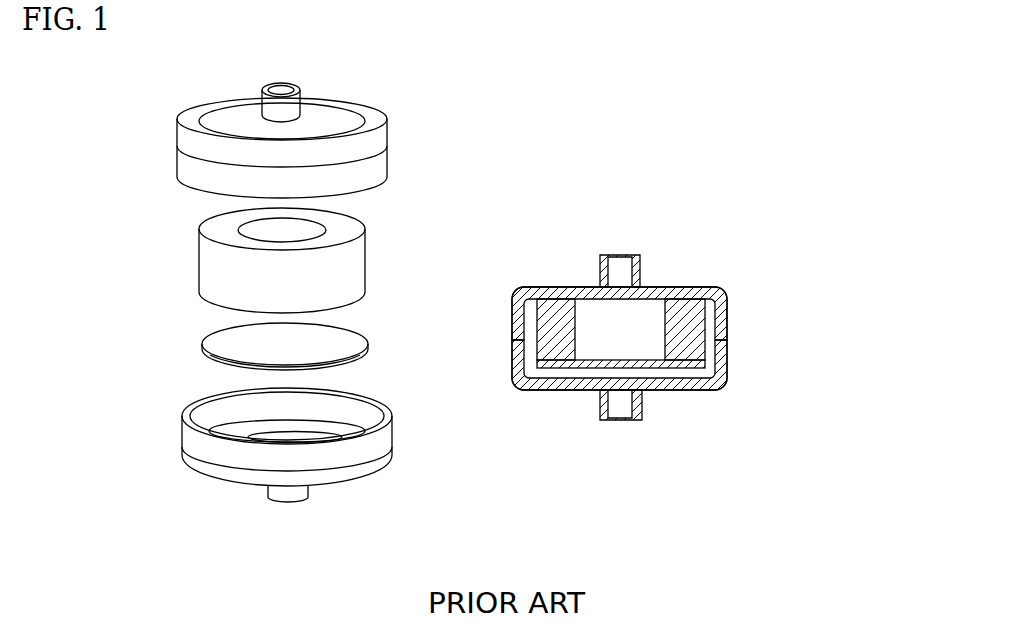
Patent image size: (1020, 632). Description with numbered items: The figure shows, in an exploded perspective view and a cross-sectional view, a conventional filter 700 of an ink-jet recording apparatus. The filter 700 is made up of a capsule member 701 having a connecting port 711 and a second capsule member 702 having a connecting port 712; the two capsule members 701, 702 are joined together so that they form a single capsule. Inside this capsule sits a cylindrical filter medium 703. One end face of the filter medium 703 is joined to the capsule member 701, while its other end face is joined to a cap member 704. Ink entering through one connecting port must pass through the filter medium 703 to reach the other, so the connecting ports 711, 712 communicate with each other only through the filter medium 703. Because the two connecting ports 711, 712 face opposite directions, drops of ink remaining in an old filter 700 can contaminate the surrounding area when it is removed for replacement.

The filter 700 is at (617, 322).
The capsule member 701 is at (192, 128).
The capsule member 702 is at (188, 440).
The cylindrical filter medium 703 is at (210, 263).
The cap member 704 is at (205, 347).
The connecting port 711 is at (643, 268).
The connecting port 712 is at (645, 410).